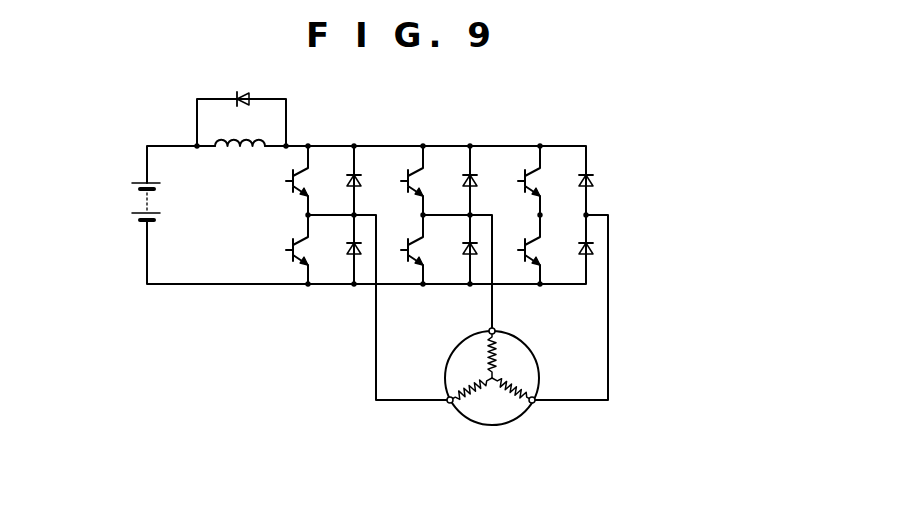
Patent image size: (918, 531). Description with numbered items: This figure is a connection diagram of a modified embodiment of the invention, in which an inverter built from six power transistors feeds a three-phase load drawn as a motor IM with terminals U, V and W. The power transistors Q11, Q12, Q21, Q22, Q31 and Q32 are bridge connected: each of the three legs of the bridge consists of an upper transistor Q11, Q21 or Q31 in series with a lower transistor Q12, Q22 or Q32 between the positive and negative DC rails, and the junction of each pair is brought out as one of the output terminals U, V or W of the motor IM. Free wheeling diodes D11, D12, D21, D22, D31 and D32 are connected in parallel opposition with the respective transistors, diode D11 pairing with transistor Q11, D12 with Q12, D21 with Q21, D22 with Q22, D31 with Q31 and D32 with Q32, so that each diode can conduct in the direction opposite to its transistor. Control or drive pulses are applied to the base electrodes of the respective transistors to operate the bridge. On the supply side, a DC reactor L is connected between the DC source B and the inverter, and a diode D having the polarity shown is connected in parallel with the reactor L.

The DC source B is at (140, 203).
The diode D is at (243, 92).
The DC reactor L is at (243, 153).
The power transistor Q11 is at (299, 176).
The power transistor Q12 is at (289, 250).
The power transistor Q21 is at (414, 176).
The power transistor Q22 is at (404, 250).
The power transistor Q31 is at (531, 176).
The power transistor Q32 is at (521, 250).
The free wheeling diode D11 is at (361, 180).
The free wheeling diode D12 is at (347, 248).
The free wheeling diode D21 is at (477, 180).
The free wheeling diode D22 is at (463, 248).
The free wheeling diode D31 is at (593, 180).
The free wheeling diode D32 is at (579, 248).
The induction motor IM is at (490, 380).
The motor terminal U is at (438, 393).
The motor terminal V is at (499, 323).
The motor terminal W is at (543, 393).